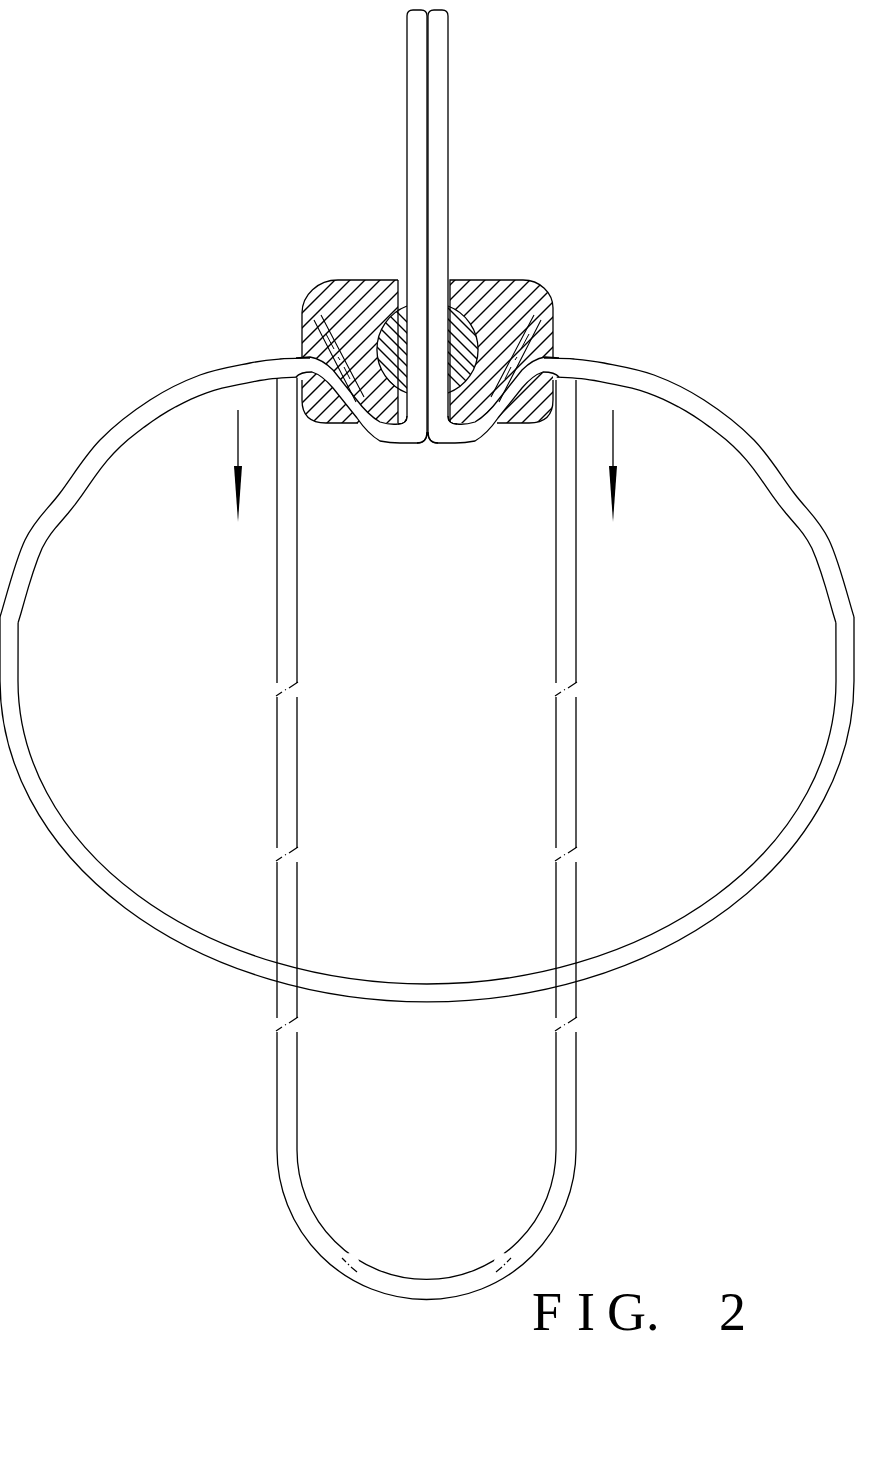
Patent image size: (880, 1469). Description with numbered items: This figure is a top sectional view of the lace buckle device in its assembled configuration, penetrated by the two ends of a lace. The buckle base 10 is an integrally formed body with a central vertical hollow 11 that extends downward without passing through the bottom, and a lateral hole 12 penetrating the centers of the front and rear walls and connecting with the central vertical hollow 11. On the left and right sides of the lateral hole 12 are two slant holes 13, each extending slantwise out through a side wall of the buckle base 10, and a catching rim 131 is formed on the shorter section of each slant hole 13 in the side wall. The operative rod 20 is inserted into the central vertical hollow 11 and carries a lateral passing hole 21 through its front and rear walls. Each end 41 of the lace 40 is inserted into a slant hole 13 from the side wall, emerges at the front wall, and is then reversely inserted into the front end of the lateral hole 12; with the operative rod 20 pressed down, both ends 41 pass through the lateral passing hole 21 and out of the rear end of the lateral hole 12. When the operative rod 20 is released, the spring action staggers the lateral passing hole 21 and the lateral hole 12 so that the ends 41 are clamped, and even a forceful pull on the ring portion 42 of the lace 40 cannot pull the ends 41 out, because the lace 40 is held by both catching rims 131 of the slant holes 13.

The buckle base 10 is at (427, 506).
The central vertical hollow 11 is at (462, 318).
The lateral hole 12 is at (451, 416).
The slant hole 13 is at (308, 325).
The catching rim 131 is at (342, 418).
The operative rod 20 is at (393, 323).
The lateral passing hole 21 is at (408, 332).
The lace 40 is at (228, 356).
The end of the lace 41 is at (441, 177).
The ring portion 42 is at (645, 950).